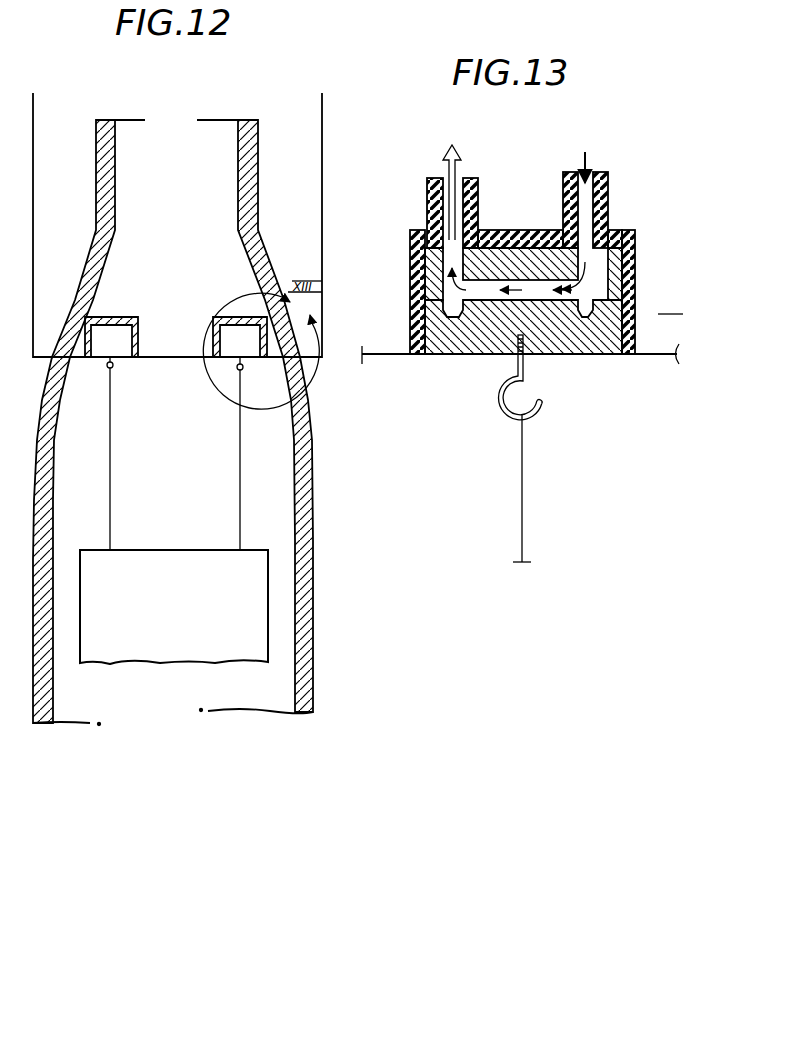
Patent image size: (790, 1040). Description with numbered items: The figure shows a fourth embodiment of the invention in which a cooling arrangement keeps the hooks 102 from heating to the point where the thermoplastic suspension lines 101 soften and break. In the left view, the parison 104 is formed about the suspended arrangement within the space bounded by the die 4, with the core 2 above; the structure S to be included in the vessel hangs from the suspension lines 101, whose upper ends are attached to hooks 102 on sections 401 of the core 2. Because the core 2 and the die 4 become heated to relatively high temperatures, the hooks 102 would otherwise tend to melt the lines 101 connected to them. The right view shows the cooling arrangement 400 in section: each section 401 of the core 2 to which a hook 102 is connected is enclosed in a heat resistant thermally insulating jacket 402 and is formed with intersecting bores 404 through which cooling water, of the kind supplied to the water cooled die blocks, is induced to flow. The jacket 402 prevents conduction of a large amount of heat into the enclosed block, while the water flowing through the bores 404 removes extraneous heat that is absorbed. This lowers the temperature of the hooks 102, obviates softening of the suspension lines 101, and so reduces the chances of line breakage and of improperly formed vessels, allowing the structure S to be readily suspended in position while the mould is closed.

In FIG. 12, the core 2 is at (217, 190).
In FIG. 13, the core 2 is at (670, 302).
In FIG. 12, the die 4 is at (322, 194).
In FIG. 12, the suspension lines 101 is at (110, 440).
In FIG. 13, the suspension lines 101 is at (524, 492).
In FIG. 12, the hooks 102 is at (114, 366).
In FIG. 13, the hooks 102 is at (545, 408).
In FIG. 12, the parison 104 is at (312, 486).
In FIG. 12, the insulated cooled hook section 400 is at (113, 315).
In FIG. 13, the insulated cooled hook section 400 is at (518, 232).
In FIG. 13, the sections of the core 401 is at (470, 331).
In FIG. 13, the thermally insulating jacket 402 is at (420, 274).
In FIG. 13, the intersecting bores 404 is at (541, 283).
In FIG. 12, the structure S is at (252, 601).